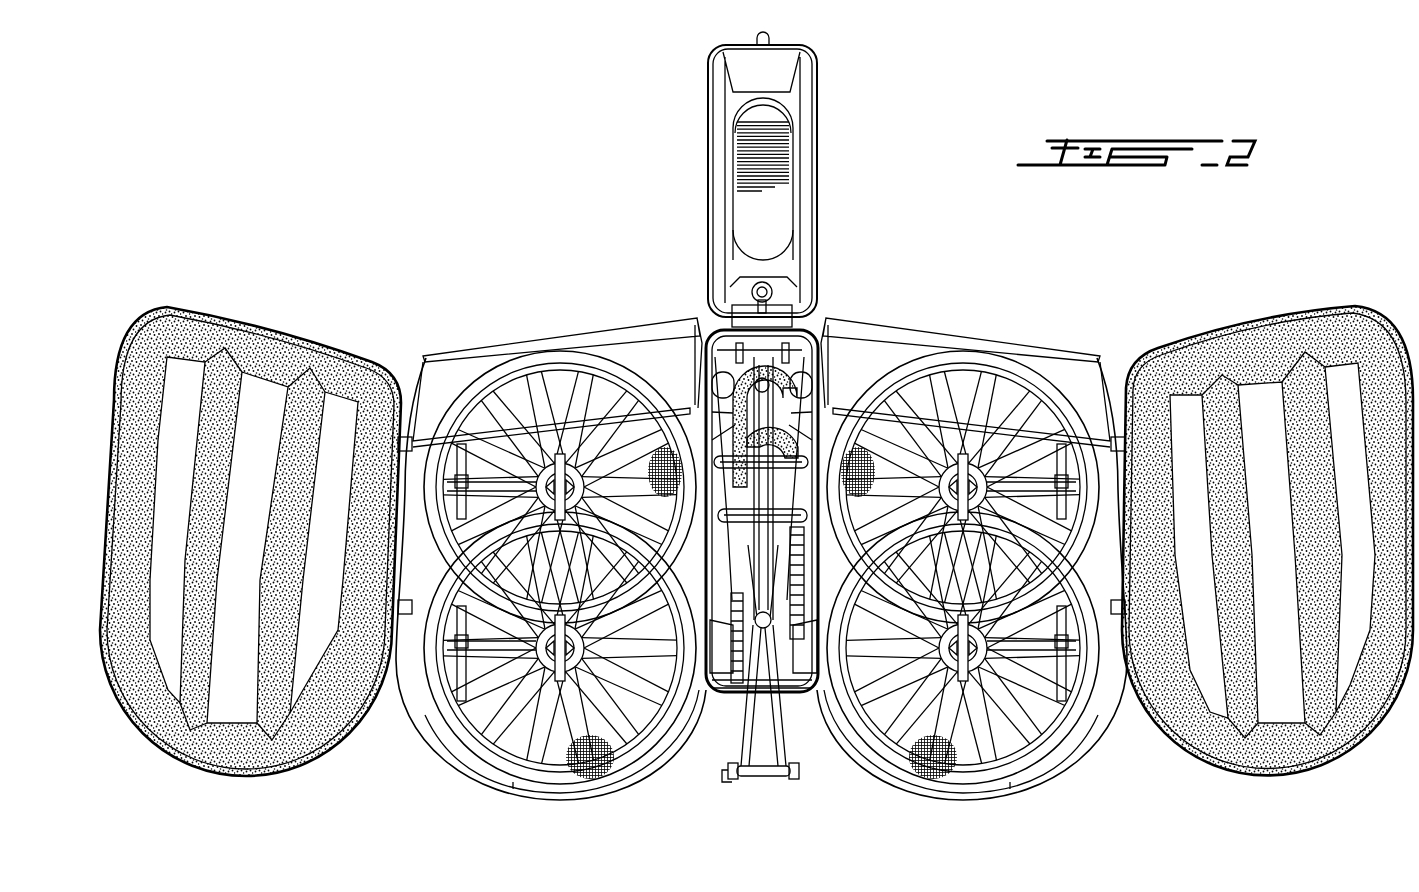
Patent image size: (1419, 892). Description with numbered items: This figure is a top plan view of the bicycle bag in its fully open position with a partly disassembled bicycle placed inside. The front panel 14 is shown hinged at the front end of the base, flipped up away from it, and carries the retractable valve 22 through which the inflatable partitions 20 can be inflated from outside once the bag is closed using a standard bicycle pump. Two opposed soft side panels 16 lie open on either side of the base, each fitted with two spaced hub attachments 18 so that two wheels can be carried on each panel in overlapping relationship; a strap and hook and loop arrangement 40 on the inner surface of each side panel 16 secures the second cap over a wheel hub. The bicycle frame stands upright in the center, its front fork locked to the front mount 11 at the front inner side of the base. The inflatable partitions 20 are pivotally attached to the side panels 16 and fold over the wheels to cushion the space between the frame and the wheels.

The front mount 11 is at (755, 345).
The front panel 14 is at (780, 160).
The side panels 16 is at (643, 352).
The hub attachments 18 is at (560, 458).
The inflatable partitions 20 is at (205, 335).
The retractable valve 22 is at (768, 293).
The strap and hook and loop arrangement 40 is at (572, 465).